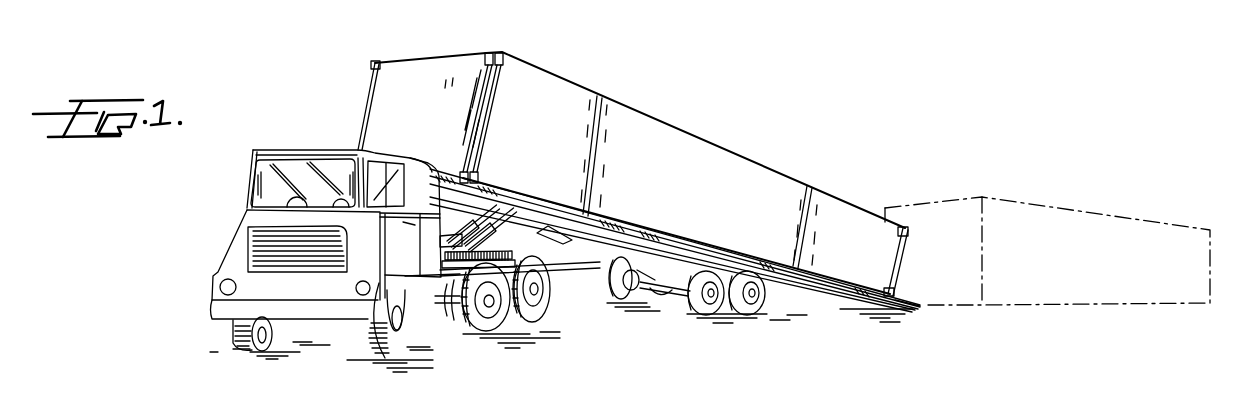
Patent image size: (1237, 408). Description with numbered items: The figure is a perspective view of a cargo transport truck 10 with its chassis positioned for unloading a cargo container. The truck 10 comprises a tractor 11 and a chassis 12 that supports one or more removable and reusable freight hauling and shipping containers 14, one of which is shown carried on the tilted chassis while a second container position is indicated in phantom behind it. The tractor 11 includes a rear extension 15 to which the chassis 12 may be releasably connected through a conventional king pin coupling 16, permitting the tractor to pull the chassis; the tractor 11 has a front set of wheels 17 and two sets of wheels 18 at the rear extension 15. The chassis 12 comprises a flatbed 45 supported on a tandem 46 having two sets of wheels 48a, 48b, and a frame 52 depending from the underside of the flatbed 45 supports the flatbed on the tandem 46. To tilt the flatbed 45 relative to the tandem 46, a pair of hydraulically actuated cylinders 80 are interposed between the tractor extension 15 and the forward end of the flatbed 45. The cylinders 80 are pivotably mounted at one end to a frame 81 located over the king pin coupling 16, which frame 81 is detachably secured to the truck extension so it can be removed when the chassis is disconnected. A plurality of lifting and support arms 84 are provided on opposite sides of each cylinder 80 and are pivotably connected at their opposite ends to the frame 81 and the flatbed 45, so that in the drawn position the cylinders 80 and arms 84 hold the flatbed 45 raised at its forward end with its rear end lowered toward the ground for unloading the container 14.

The cargo transport truck 10 is at (334, 108).
The tractor 11 is at (232, 240).
The chassis 12 is at (818, 305).
The freight hauling and shipping container 14 is at (700, 153).
The rear extension 15 is at (528, 251).
The king pin coupling 16 is at (475, 334).
The front set of wheels 17 is at (233, 335).
The rear sets of wheels 18 is at (538, 309).
The flatbed 45 is at (614, 226).
The tandem 46 is at (612, 295).
The first set of tandem wheels 48a is at (640, 298).
The second set of tandem wheels 48b is at (745, 309).
The frame 52 is at (654, 248).
The hydraulically actuated cylinder 80 is at (518, 231).
The frame 81 is at (440, 241).
The lifting and support arm 84 is at (503, 213).